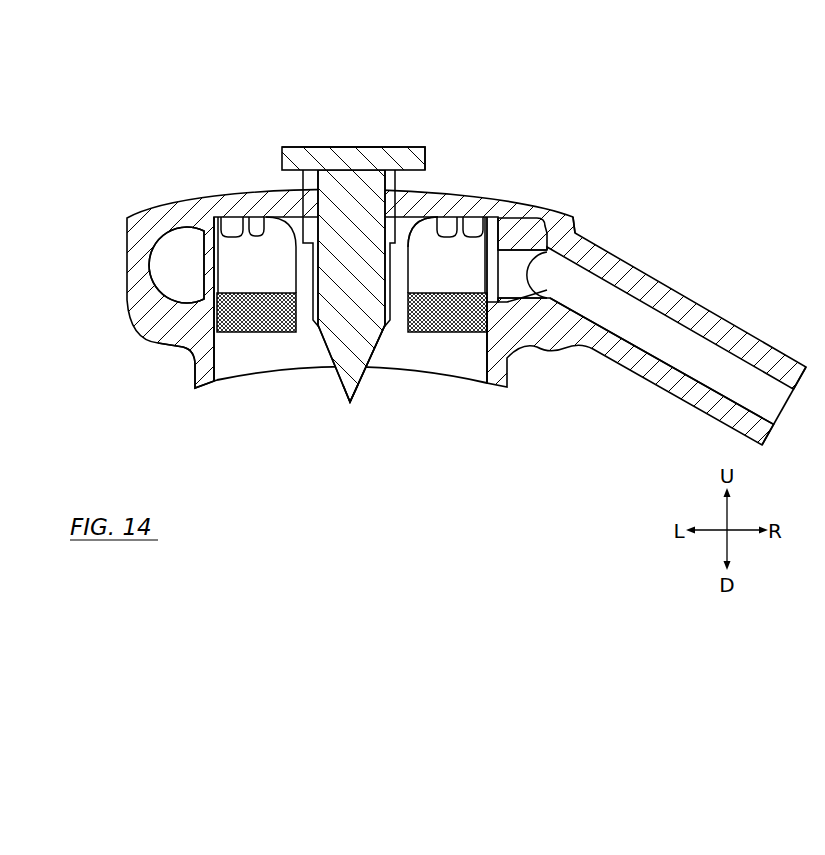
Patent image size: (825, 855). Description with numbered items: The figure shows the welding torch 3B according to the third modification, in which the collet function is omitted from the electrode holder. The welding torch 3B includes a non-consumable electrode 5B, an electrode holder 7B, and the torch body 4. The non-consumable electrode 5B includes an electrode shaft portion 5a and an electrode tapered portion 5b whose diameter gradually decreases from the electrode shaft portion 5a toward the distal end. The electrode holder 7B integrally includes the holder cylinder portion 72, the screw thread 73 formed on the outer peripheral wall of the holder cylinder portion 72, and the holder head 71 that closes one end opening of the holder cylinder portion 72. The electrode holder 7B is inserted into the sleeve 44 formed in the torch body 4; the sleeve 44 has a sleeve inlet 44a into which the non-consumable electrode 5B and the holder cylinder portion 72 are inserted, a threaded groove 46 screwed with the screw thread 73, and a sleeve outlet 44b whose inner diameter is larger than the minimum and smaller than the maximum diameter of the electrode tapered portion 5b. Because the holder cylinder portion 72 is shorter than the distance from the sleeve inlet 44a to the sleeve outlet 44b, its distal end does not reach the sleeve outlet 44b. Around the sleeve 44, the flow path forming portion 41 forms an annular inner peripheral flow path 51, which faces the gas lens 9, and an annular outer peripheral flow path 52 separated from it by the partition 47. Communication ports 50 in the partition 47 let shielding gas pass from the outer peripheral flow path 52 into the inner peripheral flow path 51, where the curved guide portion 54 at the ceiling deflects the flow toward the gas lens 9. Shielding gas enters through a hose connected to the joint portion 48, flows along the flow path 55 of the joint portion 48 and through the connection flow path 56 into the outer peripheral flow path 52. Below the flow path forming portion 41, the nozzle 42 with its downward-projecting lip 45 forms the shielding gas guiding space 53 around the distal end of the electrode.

The welding torch 3B is at (672, 151).
The torch body 4 is at (572, 216).
The gas lens 9 is at (443, 340).
The flow path forming portion 41 is at (164, 200).
The nozzle 42 is at (193, 375).
The sleeve 44 is at (300, 252).
The sleeve inlet 44a is at (398, 147).
The sleeve outlet 44b is at (325, 340).
The lip 45 is at (201, 386).
The threaded groove 46 is at (320, 147).
The partition 47 is at (191, 222).
The joint portion 48 is at (752, 332).
The communication port 50 is at (231, 222).
The inner peripheral flow path 51 is at (500, 214).
The outer peripheral flow path 52 is at (177, 275).
The shielding gas guiding space 53 is at (245, 358).
The guide portion 54 is at (450, 258).
The flow path 55 is at (659, 353).
The connection flow path 56 is at (575, 305).
The electrode shaft portion 5a is at (341, 147).
The electrode tapered portion 5b is at (364, 373).
The non-consumable electrode 5B is at (358, 405).
The holder head 71 is at (368, 147).
The holder cylinder portion 72 is at (278, 165).
The screw thread 73 is at (420, 210).
The electrode holder 7B is at (375, 147).